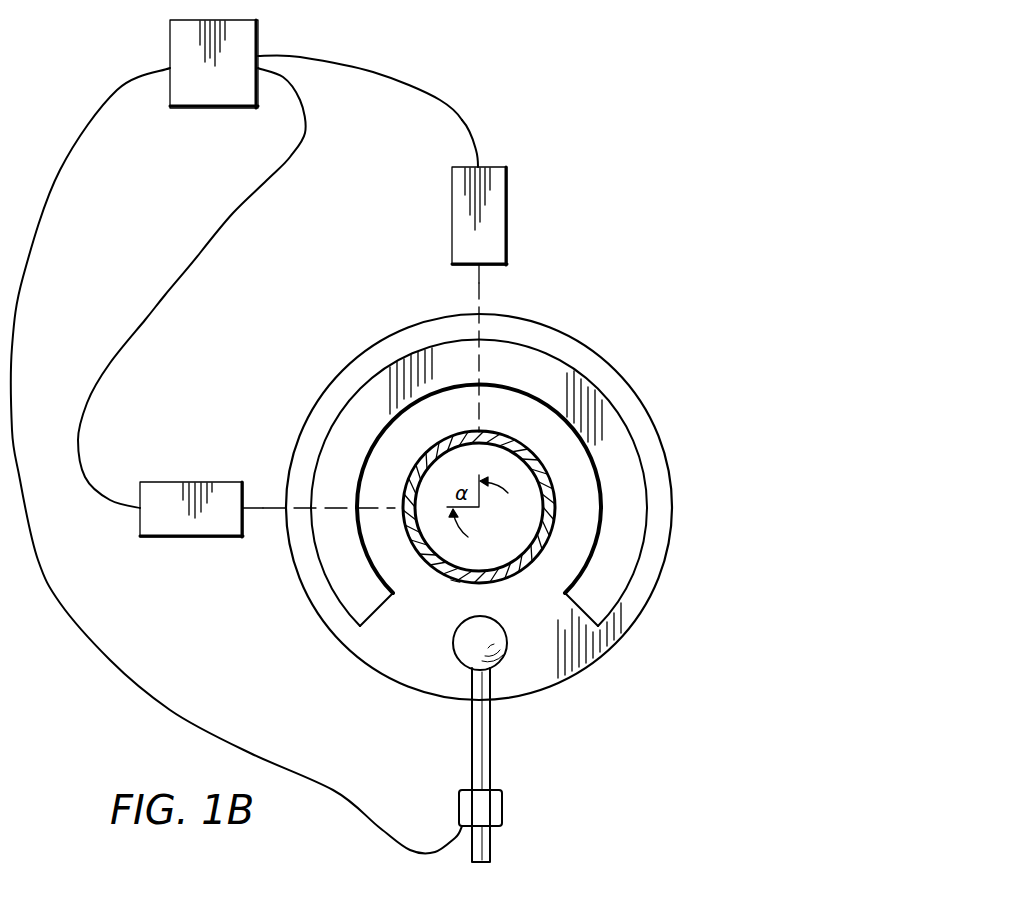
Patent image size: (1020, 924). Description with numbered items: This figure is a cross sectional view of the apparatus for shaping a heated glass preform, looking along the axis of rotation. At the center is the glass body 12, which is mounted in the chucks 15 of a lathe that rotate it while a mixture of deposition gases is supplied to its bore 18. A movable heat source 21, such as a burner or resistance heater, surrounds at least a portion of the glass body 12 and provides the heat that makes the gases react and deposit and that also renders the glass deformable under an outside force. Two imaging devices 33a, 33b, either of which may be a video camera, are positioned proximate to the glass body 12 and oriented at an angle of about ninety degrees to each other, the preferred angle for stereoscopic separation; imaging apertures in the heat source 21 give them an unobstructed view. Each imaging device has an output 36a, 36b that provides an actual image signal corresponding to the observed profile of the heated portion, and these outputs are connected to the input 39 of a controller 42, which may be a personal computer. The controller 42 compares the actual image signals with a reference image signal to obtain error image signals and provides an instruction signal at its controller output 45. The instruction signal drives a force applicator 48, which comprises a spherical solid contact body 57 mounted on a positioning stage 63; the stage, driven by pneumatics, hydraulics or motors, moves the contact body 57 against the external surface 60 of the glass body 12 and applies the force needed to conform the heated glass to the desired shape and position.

The glass body 12 is at (443, 582).
The chucks 15 is at (637, 397).
The bore 18 is at (493, 550).
The heat source 21 is at (634, 518).
The imaging device 33a is at (507, 207).
The imaging device 33b is at (230, 482).
The output 36a is at (488, 157).
The output 36b is at (132, 492).
The input 39 is at (270, 49).
The controller 42 is at (180, 108).
The controller output 45 is at (158, 59).
The force applicator 48 is at (585, 752).
The solid contact body 57 is at (500, 641).
The external surface 60 is at (458, 583).
The positioning stage 63 is at (503, 807).